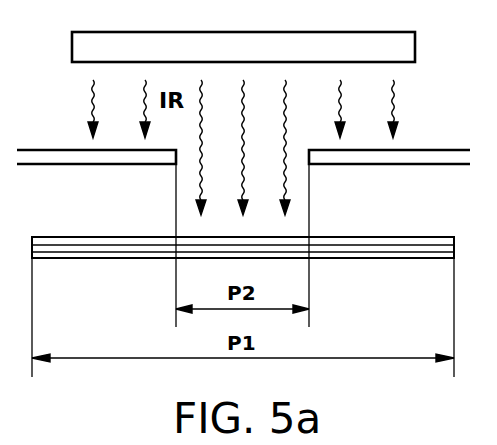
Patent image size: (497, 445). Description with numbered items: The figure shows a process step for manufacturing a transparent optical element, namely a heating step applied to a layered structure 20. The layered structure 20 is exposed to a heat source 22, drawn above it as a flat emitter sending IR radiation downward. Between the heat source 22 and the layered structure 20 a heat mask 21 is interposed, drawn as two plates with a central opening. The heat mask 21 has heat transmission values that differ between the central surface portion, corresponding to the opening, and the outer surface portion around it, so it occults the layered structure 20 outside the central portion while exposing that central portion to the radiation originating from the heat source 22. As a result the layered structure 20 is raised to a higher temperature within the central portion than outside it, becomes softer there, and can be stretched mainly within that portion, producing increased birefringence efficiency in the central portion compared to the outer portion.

The layered structure 20 is at (97, 259).
The heat mask 21 is at (50, 148).
The heat source 22 is at (415, 47).